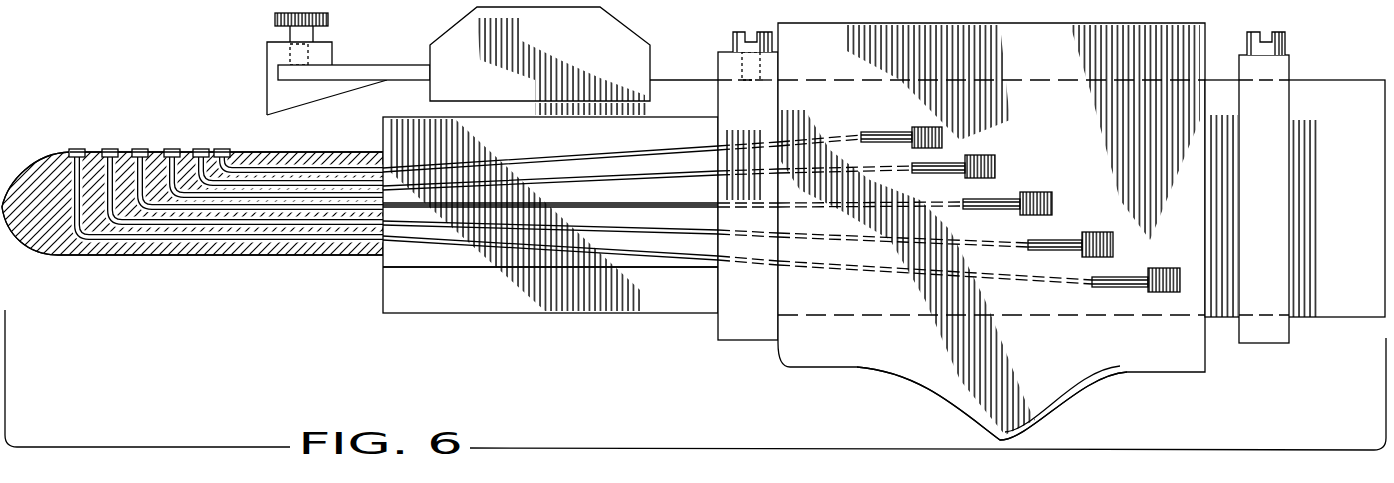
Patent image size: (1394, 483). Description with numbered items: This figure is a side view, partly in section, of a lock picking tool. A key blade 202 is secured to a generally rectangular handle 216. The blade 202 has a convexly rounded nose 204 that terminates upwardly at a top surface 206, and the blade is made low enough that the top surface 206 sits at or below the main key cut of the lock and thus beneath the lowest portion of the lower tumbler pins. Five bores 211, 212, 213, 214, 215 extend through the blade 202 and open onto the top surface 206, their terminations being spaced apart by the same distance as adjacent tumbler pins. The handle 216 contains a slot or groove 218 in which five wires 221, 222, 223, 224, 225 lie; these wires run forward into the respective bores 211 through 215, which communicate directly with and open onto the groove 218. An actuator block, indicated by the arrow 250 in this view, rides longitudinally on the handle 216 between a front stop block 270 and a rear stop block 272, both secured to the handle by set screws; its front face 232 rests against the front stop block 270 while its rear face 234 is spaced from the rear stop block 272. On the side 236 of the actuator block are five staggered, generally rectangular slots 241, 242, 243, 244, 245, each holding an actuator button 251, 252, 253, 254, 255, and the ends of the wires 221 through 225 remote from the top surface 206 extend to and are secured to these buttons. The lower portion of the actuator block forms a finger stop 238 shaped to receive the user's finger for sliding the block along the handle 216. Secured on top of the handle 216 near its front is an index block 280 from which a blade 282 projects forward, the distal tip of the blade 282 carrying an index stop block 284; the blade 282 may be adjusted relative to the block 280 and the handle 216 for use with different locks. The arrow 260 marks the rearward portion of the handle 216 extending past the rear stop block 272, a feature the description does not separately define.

The key blade 202 is at (192, 188).
The nose 204 is at (21, 180).
The top surface 206 is at (68, 150).
The bore 211 is at (218, 150).
The bore 212 is at (188, 150).
The bore 213 is at (158, 150).
The bore 214 is at (125, 150).
The bore 215 is at (96, 150).
The handle 216 is at (550, 231).
The slot or groove 218 is at (428, 262).
The wire 221 is at (706, 148).
The wire 222 is at (660, 175).
The wire 223 is at (600, 205).
The wire 224 is at (678, 238).
The wire 225 is at (491, 247).
The front face 232 is at (766, 30).
The rear face 234 is at (1208, 43).
The side 236 is at (867, 43).
The finger stop 238 is at (1028, 420).
The slot 241 is at (889, 144).
The slot 242 is at (930, 177).
The slot 243 is at (978, 210).
The slot 244 is at (1022, 251).
The slot 245 is at (1105, 289).
The connector assembly 250 is at (991, 220).
The actuator button 251 is at (926, 127).
The actuator button 252 is at (990, 156).
The actuator button 253 is at (1051, 194).
The actuator button 254 is at (1112, 233).
The actuator button 255 is at (1179, 291).
The shaft body 260 is at (1294, 187).
The front stop block 270 is at (745, 192).
The rear stop block 272 is at (1266, 338).
The index block 280 is at (617, 33).
The blade 282 is at (346, 65).
The index stop block 284 is at (267, 63).